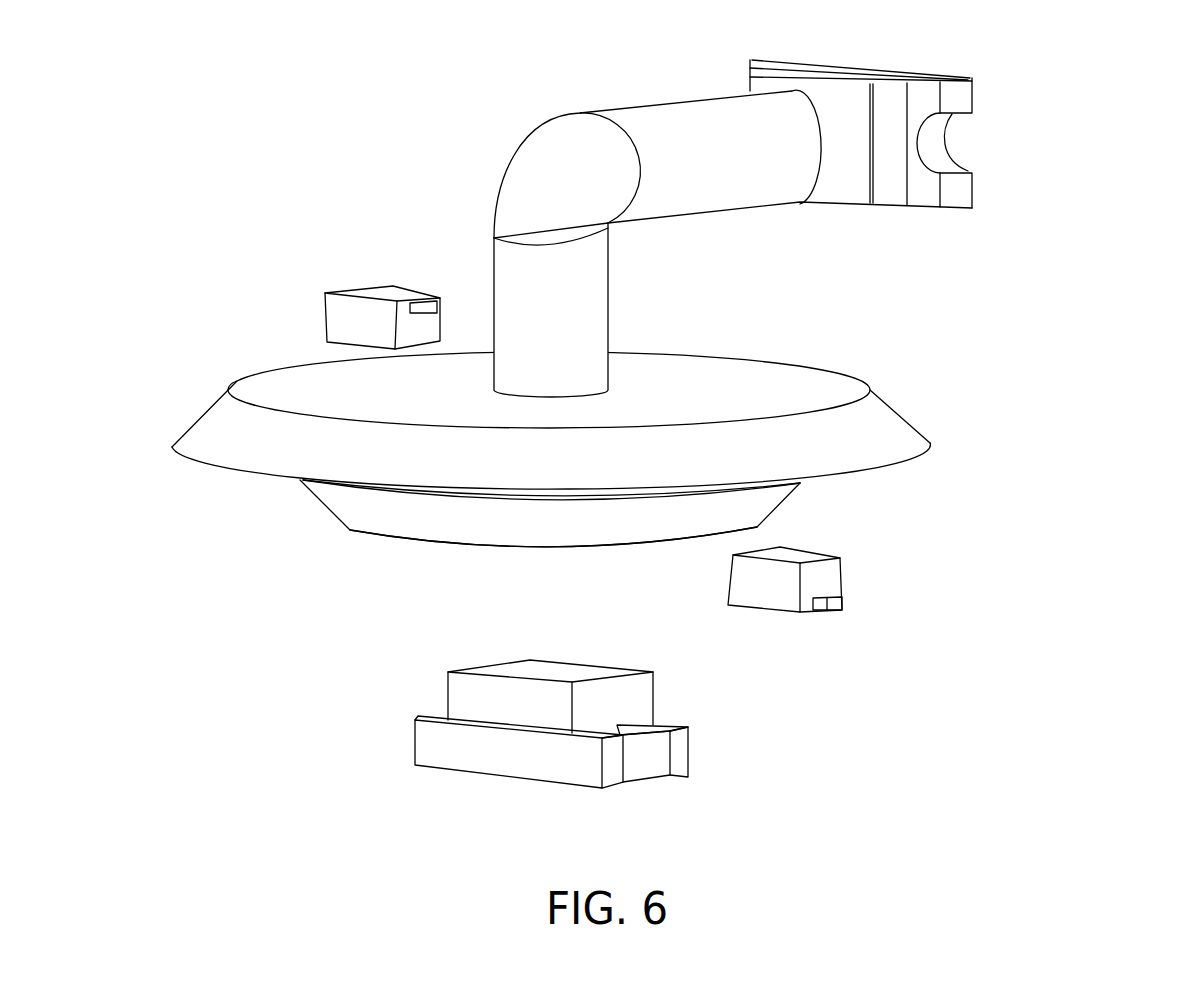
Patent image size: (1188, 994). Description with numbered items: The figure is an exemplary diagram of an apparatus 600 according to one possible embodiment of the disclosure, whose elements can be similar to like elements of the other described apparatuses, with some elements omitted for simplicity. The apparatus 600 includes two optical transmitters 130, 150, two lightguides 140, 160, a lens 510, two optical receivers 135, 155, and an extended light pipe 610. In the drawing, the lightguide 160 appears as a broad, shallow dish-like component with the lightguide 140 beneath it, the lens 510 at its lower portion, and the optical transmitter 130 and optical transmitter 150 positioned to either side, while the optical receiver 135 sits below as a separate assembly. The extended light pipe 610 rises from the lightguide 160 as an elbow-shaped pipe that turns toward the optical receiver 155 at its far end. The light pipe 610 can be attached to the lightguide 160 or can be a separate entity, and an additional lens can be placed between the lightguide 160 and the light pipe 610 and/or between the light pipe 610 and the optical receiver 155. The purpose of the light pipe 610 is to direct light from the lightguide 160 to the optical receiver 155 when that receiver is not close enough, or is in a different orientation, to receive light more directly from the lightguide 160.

The apparatus 600 is at (1147, 70).
The extended light pipe 610 is at (637, 102).
The optical receiver 155 is at (970, 172).
The lightguide 160 is at (782, 375).
The lightguide 140 is at (355, 515).
The lens 510 is at (540, 548).
The optical transmitter 130 is at (382, 288).
The optical transmitter 150 is at (782, 612).
The optical receiver 135 is at (442, 757).